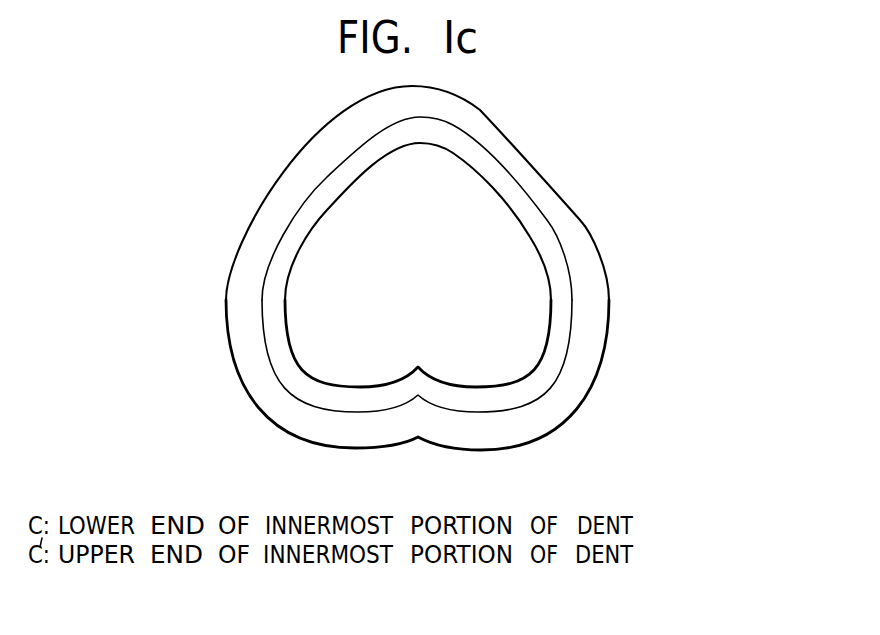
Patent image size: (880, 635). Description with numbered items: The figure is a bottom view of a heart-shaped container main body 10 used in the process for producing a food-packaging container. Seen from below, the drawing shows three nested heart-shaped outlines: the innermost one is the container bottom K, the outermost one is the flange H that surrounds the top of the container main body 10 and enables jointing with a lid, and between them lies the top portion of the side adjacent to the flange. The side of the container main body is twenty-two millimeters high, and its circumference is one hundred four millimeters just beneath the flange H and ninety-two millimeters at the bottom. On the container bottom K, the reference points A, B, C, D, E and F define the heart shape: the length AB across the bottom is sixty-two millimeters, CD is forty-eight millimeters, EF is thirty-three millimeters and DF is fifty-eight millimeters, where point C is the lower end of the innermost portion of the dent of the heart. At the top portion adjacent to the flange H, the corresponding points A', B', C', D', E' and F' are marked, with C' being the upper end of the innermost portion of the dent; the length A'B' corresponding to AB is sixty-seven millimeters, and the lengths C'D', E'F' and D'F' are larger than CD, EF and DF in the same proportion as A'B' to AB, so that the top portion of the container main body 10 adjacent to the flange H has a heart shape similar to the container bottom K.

The container main body 10 is at (556, 170).
The container bottom K is at (497, 270).
The flange H is at (528, 426).
The point A of the bottom A is at (224, 276).
The point A' of the top portion A' is at (214, 322).
The point B of the bottom B is at (602, 285).
The point B' of the top portion B' is at (618, 355).
The lower end of innermost portion of dent C is at (459, 436).
The upper end of innermost portion of dent C' is at (401, 438).
The point D of the bottom D is at (481, 107).
The point D' of the top portion D' is at (370, 92).
The point E of the bottom E is at (255, 403).
The point E' of the top portion E' is at (271, 442).
The point F of the bottom F is at (587, 396).
The point F' of the top portion F' is at (586, 432).